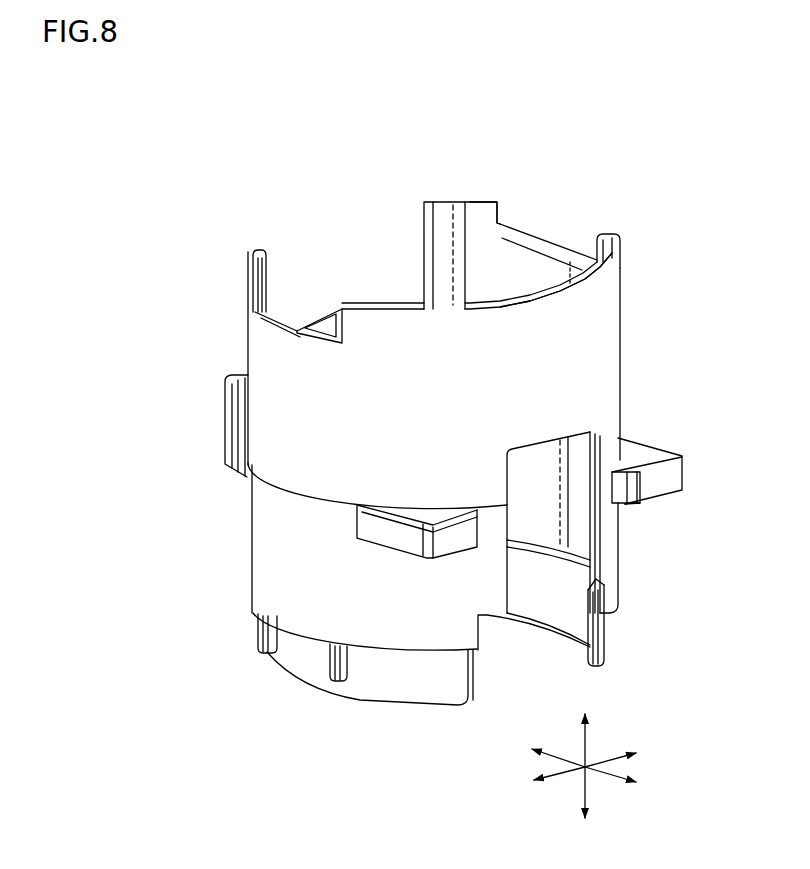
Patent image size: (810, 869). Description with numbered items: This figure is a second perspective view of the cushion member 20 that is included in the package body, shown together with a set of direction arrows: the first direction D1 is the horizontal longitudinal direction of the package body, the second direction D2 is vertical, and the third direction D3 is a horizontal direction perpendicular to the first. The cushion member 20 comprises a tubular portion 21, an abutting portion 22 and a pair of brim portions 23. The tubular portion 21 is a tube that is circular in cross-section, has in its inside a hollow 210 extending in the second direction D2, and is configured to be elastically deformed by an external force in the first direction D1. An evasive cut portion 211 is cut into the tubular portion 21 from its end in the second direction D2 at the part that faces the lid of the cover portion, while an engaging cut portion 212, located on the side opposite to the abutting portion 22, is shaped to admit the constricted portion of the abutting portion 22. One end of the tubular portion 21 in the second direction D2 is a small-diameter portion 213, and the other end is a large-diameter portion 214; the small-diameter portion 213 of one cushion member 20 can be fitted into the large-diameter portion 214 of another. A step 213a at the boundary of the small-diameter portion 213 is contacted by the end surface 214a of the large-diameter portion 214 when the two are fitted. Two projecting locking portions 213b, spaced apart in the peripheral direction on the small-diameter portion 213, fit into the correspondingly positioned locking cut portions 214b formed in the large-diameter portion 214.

The cushion member 20 is at (240, 198).
The tubular portion 21 is at (628, 385).
The abutting portion 22 is at (226, 423).
The brim portions 23 is at (687, 468).
The hollow 210 is at (478, 262).
The evasive cut portion 211 is at (423, 246).
The engaging cut portion 212 is at (590, 530).
The small-diameter portion 213 is at (362, 692).
The step 213a is at (604, 616).
The locking portions 213b is at (345, 684).
The large-diameter portion 214 is at (621, 274).
The end surface 214a is at (612, 240).
The locking cut portions 214b is at (503, 226).
The first direction D1 is at (562, 753).
The second direction D2 is at (588, 786).
The third direction D3 is at (612, 756).